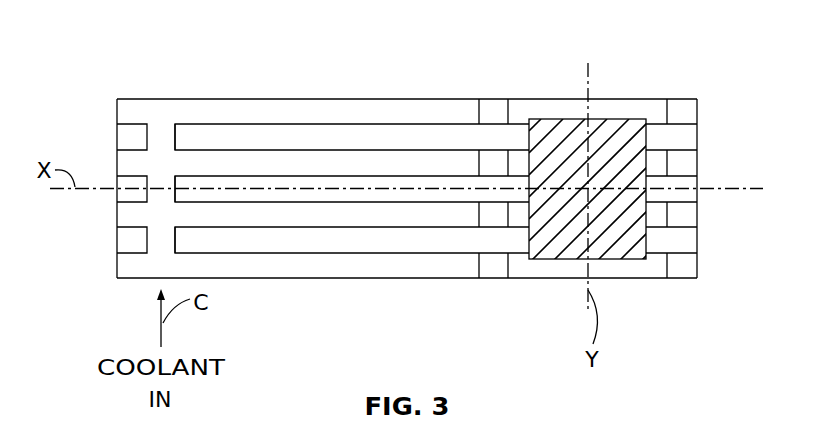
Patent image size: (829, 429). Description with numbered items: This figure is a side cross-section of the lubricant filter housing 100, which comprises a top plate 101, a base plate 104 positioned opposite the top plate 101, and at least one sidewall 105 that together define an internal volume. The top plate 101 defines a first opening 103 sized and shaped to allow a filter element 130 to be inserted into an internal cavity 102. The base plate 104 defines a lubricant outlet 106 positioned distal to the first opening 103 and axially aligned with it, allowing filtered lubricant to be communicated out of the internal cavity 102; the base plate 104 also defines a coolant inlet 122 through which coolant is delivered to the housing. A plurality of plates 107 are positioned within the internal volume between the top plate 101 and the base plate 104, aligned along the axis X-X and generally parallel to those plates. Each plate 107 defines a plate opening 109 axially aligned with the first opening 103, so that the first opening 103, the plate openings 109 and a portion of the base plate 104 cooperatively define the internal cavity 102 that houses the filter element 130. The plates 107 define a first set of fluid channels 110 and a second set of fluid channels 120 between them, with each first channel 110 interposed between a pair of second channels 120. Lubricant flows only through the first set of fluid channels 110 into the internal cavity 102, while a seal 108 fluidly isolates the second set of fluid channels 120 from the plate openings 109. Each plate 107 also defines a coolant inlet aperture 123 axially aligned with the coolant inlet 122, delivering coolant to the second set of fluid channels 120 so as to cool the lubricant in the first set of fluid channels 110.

The lubricant filter housing 100 is at (501, 56).
The top plate 101 is at (258, 99).
The internal cavity 102 is at (653, 193).
The first opening 103 is at (615, 99).
The base plate 104 is at (299, 278).
The sidewall 105 is at (117, 112).
The lubricant outlet 106 is at (620, 278).
The plates 107 is at (221, 124).
The seal 108 is at (508, 115).
The plate opening 109 is at (641, 116).
The first set of fluid channels 110 is at (398, 130).
The second set of fluid channels 120 is at (290, 118).
The coolant inlet 122 is at (157, 278).
The coolant inlet aperture 123 is at (162, 133).
The filter element 130 is at (646, 139).